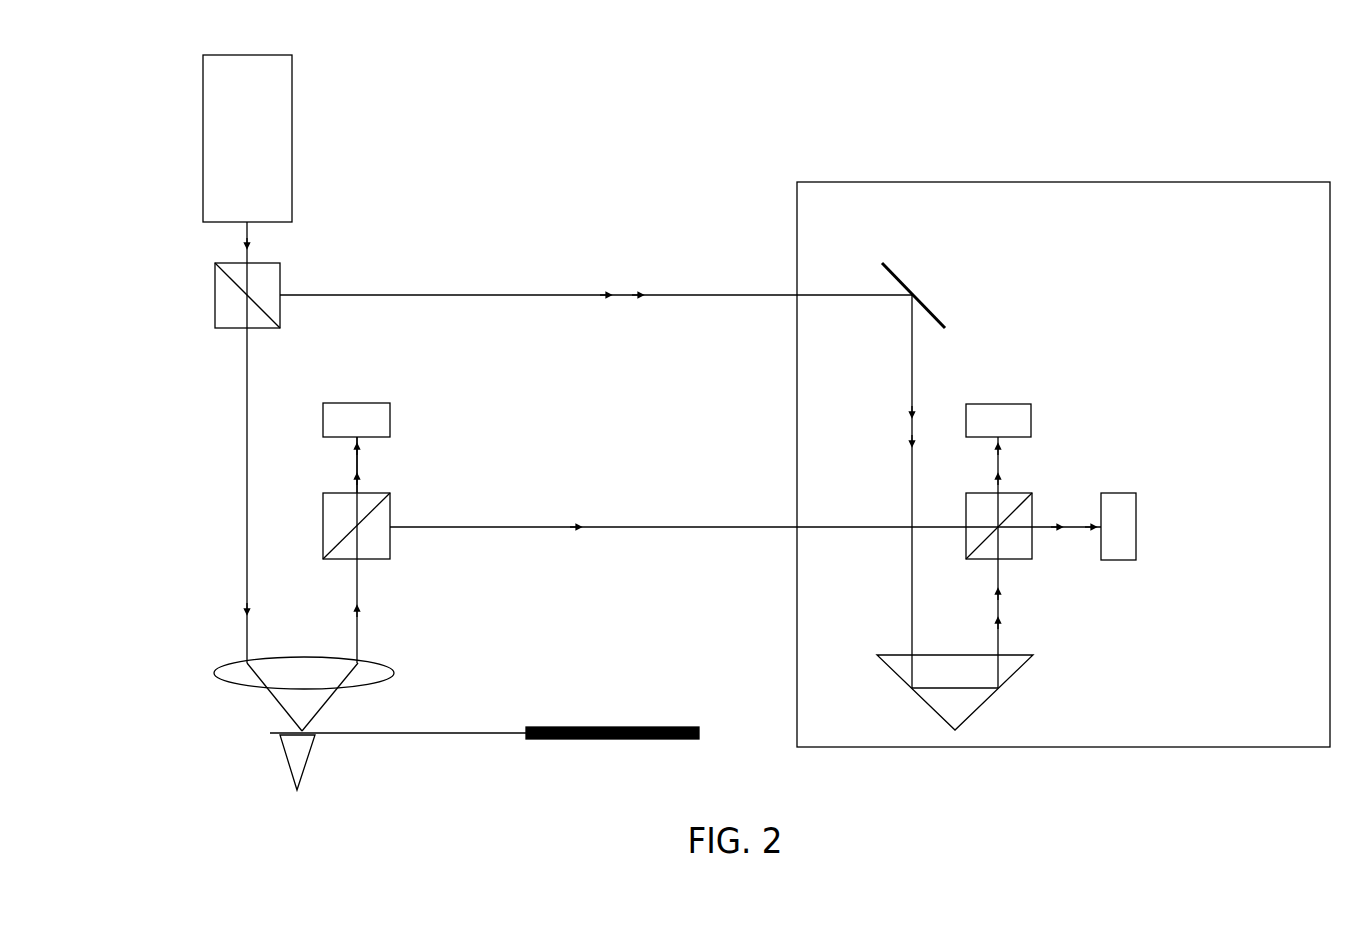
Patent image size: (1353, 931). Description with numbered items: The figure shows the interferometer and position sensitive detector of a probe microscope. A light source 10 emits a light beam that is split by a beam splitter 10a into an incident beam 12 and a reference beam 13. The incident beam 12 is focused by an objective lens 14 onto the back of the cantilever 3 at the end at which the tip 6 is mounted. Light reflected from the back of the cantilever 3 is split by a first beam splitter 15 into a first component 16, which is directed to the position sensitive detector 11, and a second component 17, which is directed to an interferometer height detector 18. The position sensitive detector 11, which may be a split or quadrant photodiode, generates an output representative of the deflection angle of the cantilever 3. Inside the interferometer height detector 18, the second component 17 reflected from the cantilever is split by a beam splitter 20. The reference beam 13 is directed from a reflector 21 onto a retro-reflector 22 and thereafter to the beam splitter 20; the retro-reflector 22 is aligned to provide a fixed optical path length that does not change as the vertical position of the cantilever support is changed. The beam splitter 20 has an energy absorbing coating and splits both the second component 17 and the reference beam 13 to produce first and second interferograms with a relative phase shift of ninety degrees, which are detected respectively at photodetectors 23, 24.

The cantilever 3 is at (300, 733).
The tip 6 is at (310, 757).
The light source 10 is at (203, 138).
The beam splitter 10a is at (215, 292).
The position sensitive detector 11 is at (392, 418).
The incident beam 12 is at (247, 468).
The reference beam 13 is at (700, 295).
The objective lens 14 is at (214, 673).
The first beam splitter 15 is at (390, 558).
The first component 16 is at (358, 460).
The second component 17 is at (623, 528).
The interferometer height detector 18 is at (1068, 181).
The beam splitter 20 is at (1032, 560).
The reflector 21 is at (893, 272).
The retro-reflector 22 is at (1000, 689).
The photodetector 23 is at (1033, 418).
The photodetector 24 is at (1118, 492).